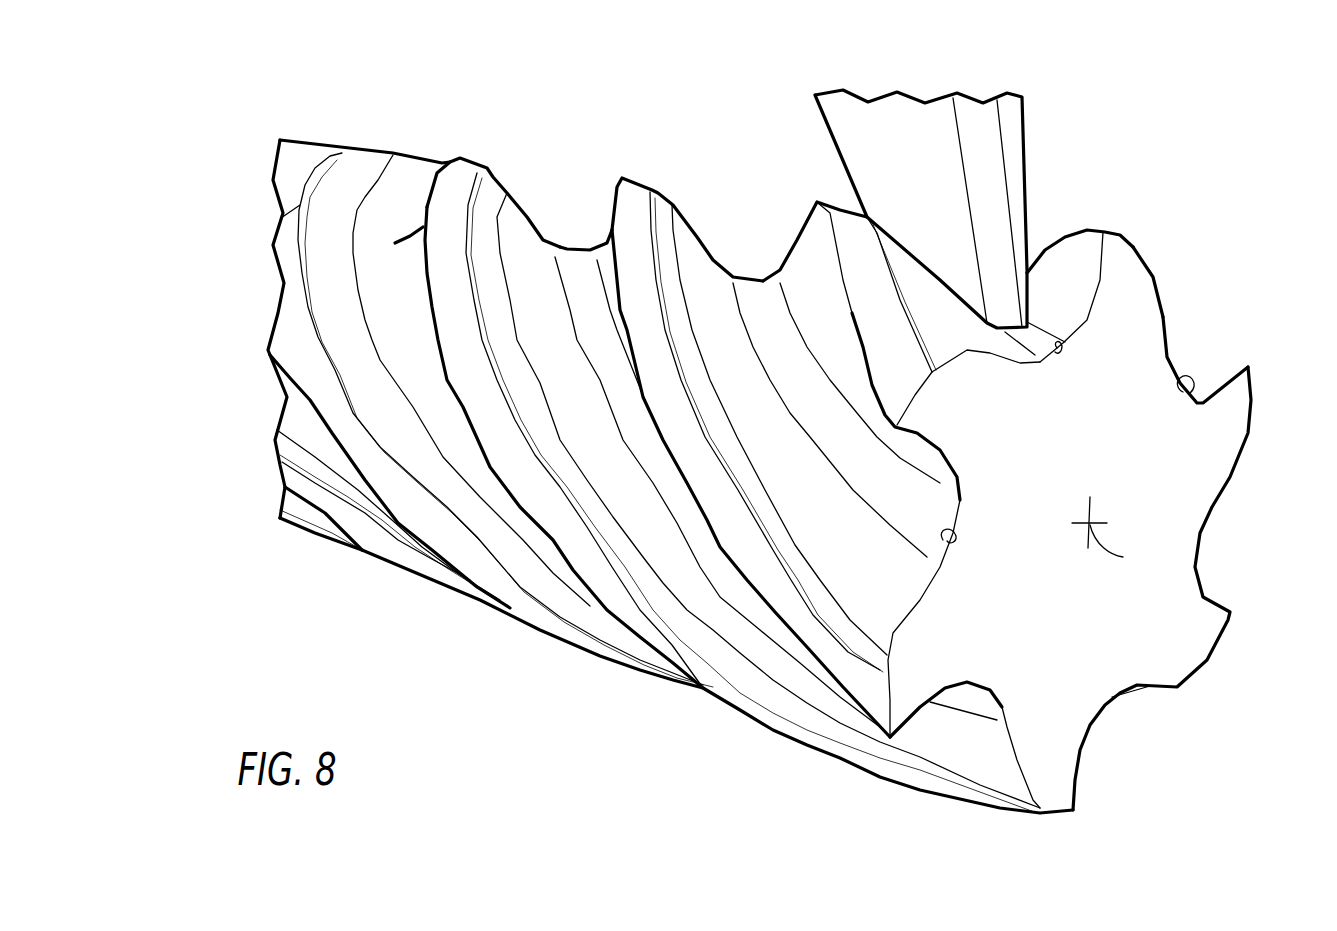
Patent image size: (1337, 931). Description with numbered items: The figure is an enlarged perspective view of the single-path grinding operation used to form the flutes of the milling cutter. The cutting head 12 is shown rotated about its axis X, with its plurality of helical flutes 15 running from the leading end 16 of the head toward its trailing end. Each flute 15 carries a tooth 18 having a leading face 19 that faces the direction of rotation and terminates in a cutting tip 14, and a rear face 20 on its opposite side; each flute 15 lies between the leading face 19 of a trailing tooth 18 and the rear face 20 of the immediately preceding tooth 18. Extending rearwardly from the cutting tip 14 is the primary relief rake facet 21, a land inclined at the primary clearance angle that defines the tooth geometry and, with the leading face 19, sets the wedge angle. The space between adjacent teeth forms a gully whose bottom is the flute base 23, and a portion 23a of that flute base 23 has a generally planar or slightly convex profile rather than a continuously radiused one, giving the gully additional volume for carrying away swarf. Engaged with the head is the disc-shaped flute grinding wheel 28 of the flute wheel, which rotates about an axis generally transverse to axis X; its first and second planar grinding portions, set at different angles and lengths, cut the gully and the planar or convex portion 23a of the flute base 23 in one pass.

The cutting head 12 is at (797, 427).
The cutting tip 14 is at (897, 427).
The helical flutes 15 is at (582, 215).
The leading end 16 is at (1177, 495).
The tooth 18 is at (830, 215).
The leading face 19 is at (1076, 273).
The rear face 20 is at (1163, 297).
The primary relief rake facet 21 is at (850, 236).
The flute base 23 is at (1037, 303).
The portion of the flute base 23a is at (1190, 393).
The flute grinding wheel 28 is at (988, 147).